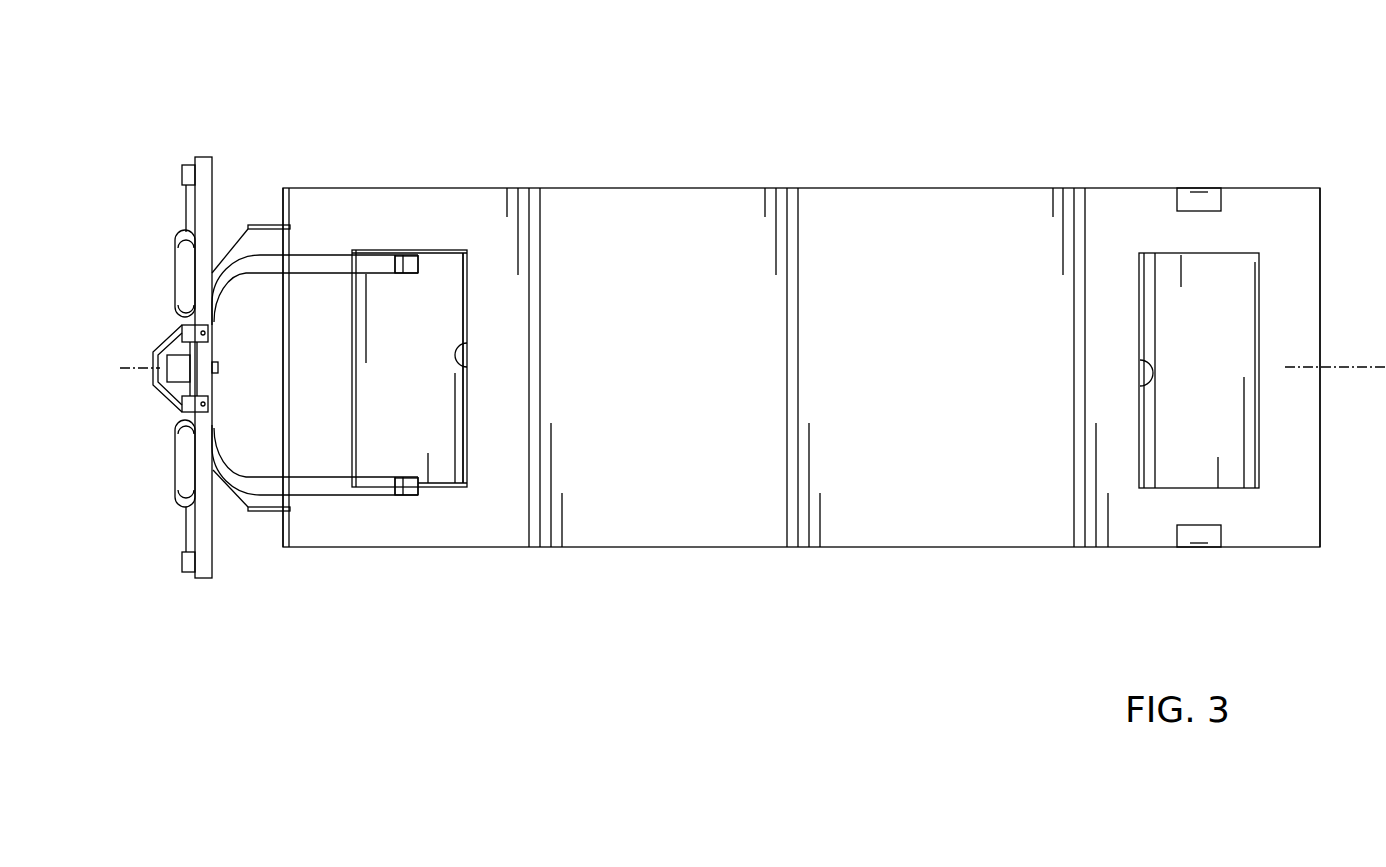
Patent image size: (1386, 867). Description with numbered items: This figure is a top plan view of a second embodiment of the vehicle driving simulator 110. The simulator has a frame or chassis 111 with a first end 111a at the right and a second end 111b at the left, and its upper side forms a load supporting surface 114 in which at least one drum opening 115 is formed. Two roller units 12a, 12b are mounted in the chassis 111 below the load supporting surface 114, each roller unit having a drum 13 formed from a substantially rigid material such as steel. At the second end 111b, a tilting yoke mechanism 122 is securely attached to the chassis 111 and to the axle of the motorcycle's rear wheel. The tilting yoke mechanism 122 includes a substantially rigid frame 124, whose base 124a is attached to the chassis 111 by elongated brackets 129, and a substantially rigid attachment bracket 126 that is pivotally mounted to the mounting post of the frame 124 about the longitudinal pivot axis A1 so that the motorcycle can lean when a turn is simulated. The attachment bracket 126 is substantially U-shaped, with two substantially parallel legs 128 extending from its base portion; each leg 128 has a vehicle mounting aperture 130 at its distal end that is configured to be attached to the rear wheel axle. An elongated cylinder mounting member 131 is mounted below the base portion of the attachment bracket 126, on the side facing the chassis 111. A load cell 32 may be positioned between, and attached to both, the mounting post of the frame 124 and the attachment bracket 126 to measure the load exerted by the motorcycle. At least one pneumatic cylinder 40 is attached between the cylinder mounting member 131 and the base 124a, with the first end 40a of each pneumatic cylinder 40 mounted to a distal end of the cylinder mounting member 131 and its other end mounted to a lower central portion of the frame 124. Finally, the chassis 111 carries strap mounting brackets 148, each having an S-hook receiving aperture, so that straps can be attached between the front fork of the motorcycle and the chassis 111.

The vehicle driving simulator 110 is at (687, 103).
The frame or chassis 111 is at (964, 181).
The first end 111a is at (1318, 187).
The second end 111b is at (294, 198).
The load supporting surface 114 is at (873, 347).
The drum opening 115 is at (468, 370).
The roller unit 12a is at (1157, 240).
The roller unit 12b is at (437, 227).
The drum 13 is at (468, 317).
The tilting yoke mechanism 122 is at (178, 58).
The frame 124 is at (267, 213).
The base 124a is at (247, 512).
The attachment bracket 126 is at (342, 243).
The leg 128 is at (384, 262).
The elongated bracket 129 is at (291, 215).
The vehicle mounting aperture 130 is at (393, 274).
The cylinder mounting member 131 is at (200, 157).
The strap mounting bracket 148 is at (1216, 192).
The pneumatic cylinder 40 is at (174, 270).
The first end 40a is at (187, 208).
The load cell 32 is at (170, 393).
The longitudinal pivot axis A1 is at (128, 366).